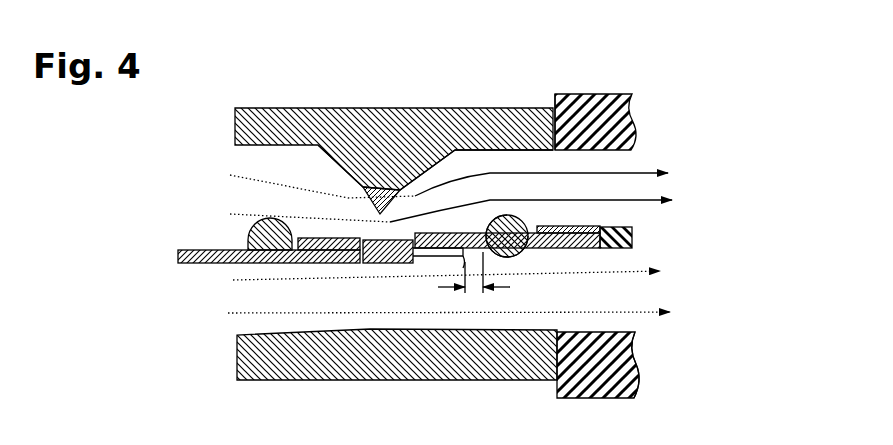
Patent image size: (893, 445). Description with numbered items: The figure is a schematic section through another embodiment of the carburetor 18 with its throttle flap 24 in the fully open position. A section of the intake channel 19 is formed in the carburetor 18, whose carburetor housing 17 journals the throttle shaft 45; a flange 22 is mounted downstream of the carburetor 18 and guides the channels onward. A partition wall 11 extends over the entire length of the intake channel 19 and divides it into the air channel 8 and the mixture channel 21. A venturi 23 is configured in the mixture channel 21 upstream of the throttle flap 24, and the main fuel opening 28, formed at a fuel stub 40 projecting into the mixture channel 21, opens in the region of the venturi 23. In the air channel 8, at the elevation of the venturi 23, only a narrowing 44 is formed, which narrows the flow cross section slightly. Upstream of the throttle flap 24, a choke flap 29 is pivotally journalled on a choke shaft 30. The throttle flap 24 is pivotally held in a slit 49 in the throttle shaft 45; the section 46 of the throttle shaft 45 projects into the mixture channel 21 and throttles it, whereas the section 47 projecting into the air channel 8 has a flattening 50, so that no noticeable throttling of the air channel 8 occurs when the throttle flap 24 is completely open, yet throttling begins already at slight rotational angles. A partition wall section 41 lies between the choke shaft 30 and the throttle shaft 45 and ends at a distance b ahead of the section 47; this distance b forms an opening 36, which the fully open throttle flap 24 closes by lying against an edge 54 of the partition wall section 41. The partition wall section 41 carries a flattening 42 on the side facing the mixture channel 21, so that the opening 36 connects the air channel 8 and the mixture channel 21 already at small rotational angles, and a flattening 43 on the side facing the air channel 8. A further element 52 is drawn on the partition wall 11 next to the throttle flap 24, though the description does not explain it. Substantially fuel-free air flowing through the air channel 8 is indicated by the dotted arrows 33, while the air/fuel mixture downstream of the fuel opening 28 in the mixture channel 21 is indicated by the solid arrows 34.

The air channel 8 is at (594, 312).
The partition wall 11 is at (640, 230).
The carburetor housing 17 is at (519, 214).
The carburetor 18 is at (282, 85).
The intake channel 19 is at (253, 293).
The mixture channel 21 is at (625, 170).
The flange 22 is at (615, 94).
The venturi 23 is at (340, 157).
The throttle flap 24 is at (543, 247).
The main fuel opening 28 is at (395, 190).
The choke flap 29 is at (178, 250).
The choke shaft 30 is at (252, 232).
The arrows 33 is at (637, 363).
The arrows 34 is at (625, 197).
The opening 36 is at (474, 255).
The fuel stub 40 is at (377, 190).
The partition wall section 41 is at (378, 263).
The flattening 42 is at (323, 238).
The flattening 43 is at (412, 263).
The narrowing 44 is at (345, 330).
The throttle shaft 45 is at (525, 213).
The section 46 is at (493, 214).
The section 47 is at (515, 254).
The slit 49 is at (508, 236).
The flattening 50 is at (511, 254).
The sealing strip 52 is at (562, 228).
The edge 54 is at (433, 256).
The distance b is at (475, 290).